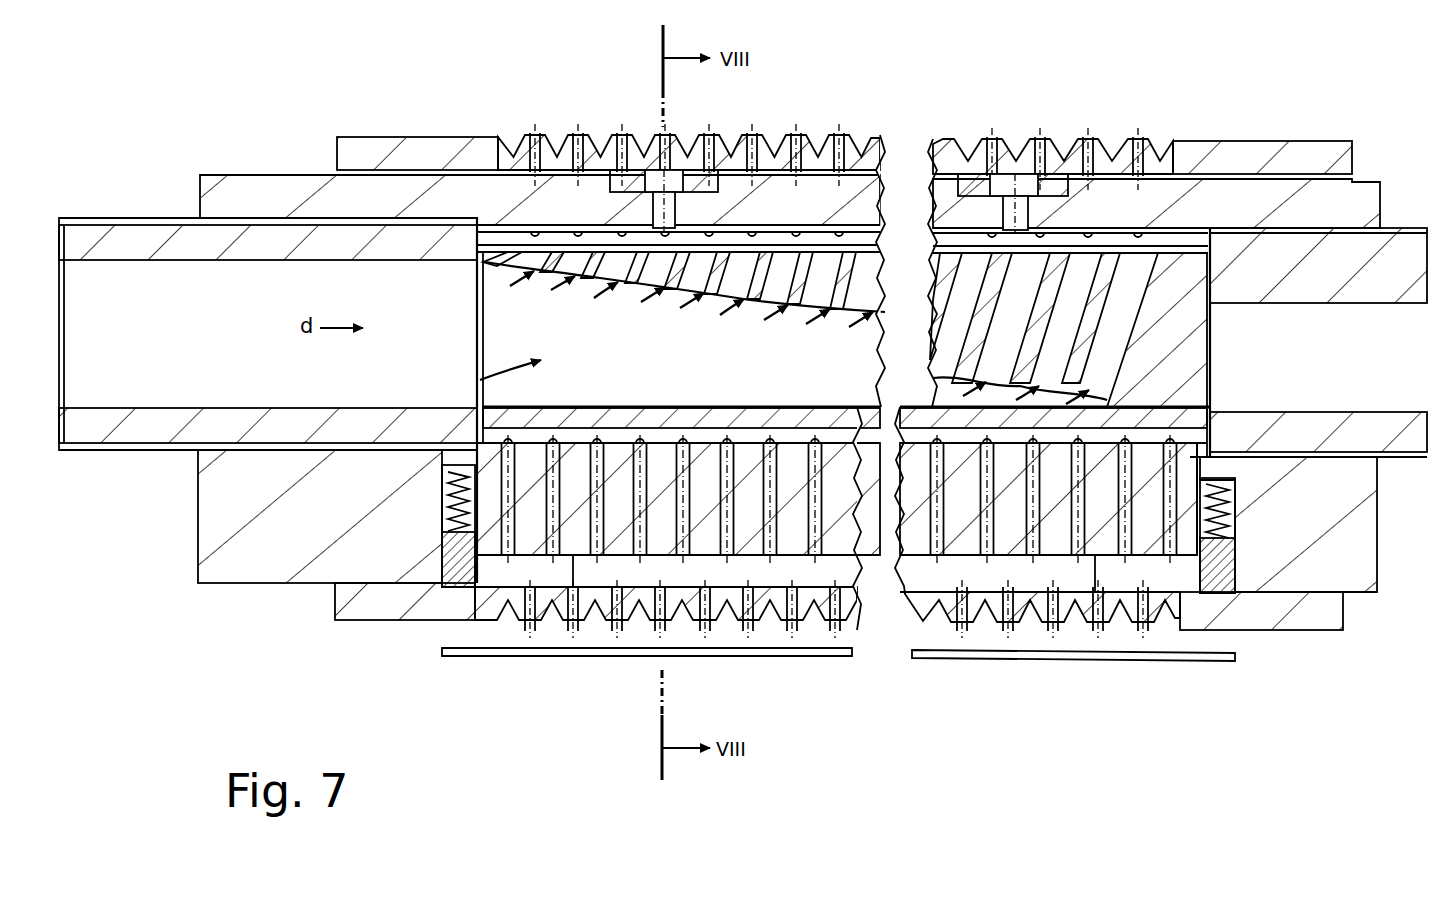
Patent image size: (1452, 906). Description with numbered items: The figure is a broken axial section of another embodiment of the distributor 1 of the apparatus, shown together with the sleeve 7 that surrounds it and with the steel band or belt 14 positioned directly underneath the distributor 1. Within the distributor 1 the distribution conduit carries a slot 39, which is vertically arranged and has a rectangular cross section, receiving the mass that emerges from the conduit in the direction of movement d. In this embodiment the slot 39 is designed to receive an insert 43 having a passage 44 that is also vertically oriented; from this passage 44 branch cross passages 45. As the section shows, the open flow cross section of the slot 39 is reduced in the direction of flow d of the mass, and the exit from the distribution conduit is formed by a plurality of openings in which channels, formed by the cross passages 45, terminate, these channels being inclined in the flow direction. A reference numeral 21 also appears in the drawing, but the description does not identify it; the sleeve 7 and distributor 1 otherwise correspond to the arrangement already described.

The distributor 1 is at (262, 188).
The sleeve 7 is at (433, 137).
The perforated strip 21 is at (748, 253).
The slot 39 is at (483, 447).
The insert 43 is at (480, 380).
The passage 44 is at (505, 325).
The cross passages 45 is at (752, 297).
The steel band or belt 14 is at (492, 657).